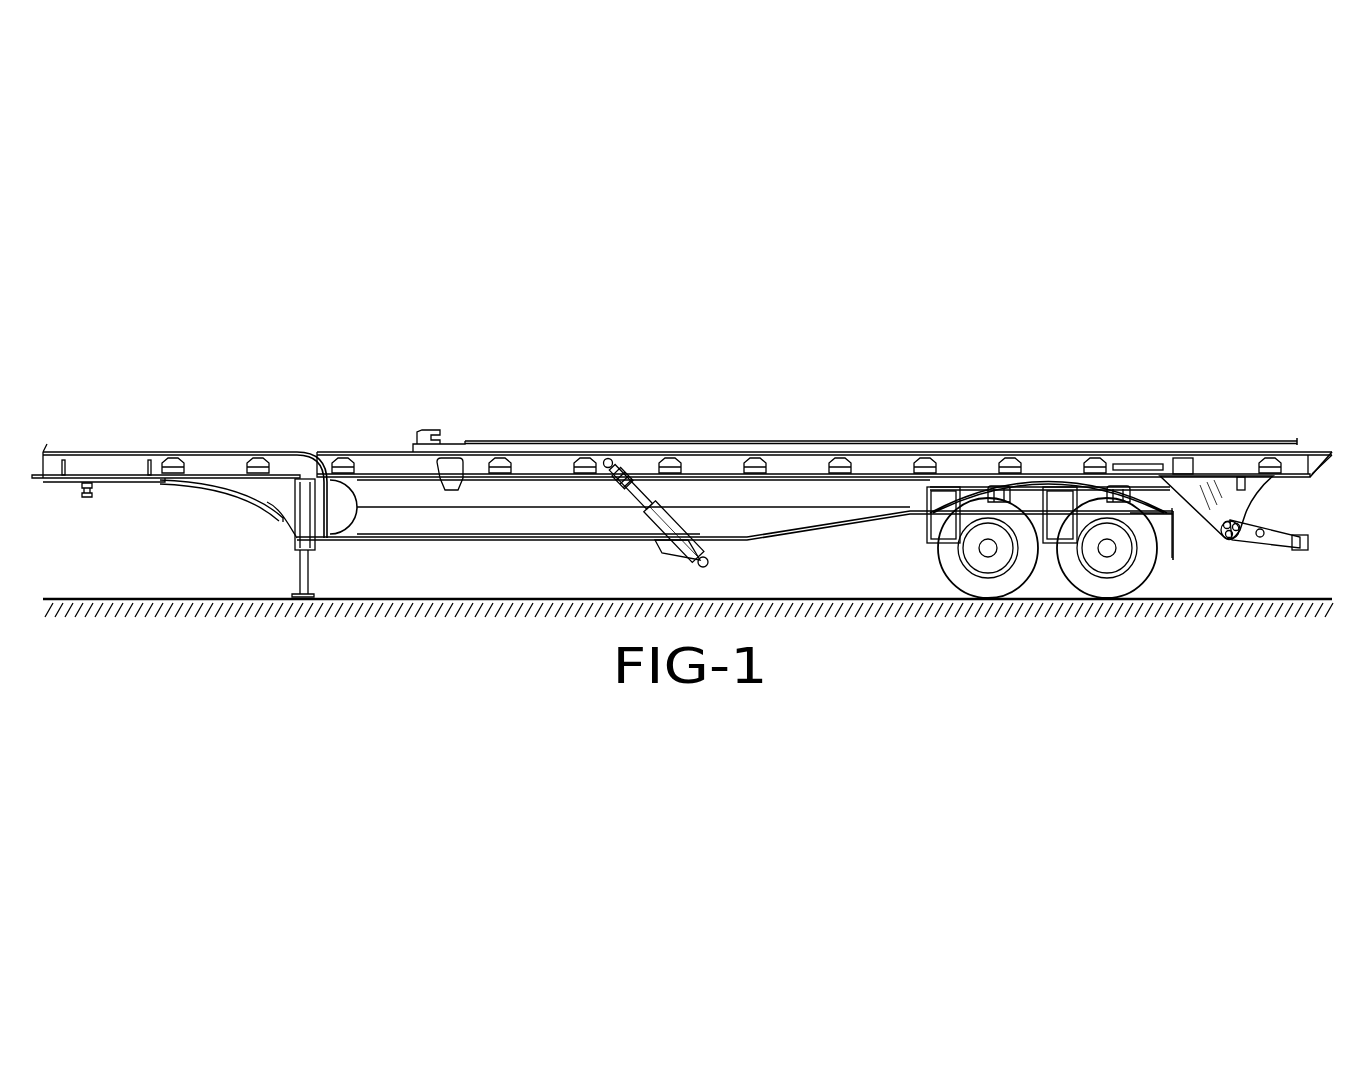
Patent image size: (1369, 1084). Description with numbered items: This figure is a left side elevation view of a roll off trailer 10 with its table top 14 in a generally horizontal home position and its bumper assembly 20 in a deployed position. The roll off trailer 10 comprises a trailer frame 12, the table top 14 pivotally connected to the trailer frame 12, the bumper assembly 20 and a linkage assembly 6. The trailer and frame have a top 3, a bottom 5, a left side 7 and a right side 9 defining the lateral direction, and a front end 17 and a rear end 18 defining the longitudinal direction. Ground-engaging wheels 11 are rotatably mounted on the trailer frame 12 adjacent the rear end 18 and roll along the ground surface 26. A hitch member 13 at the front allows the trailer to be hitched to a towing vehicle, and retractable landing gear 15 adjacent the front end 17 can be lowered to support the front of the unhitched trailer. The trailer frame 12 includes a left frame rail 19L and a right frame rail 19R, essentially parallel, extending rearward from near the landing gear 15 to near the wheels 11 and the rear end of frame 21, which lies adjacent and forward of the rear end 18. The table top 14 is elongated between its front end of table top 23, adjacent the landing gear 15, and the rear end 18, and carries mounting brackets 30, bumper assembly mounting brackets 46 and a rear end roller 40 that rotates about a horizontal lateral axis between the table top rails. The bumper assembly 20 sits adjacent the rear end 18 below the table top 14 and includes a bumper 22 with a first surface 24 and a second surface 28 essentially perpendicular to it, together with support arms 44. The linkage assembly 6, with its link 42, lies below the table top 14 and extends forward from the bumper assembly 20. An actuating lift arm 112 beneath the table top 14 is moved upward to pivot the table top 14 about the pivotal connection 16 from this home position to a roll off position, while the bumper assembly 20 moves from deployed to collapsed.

The top 3 is at (697, 465).
The bottom 5 is at (995, 578).
The linkage assembly 6 is at (1216, 451).
The link 42 is at (1184, 464).
The left side 7 is at (399, 452).
The right side 9 is at (555, 452).
The roll off trailer 10 is at (697, 506).
The ground-engaging wheels 11 is at (984, 590).
The trailer frame 12 is at (735, 575).
The hitch member 13 is at (84, 497).
The table top 14 is at (799, 452).
The retractable landing gear 15 is at (300, 573).
The pivotal connection 16 is at (1145, 465).
The front end 17 is at (52, 425).
The rear end 18 is at (1338, 445).
The left frame rail 19L is at (535, 497).
The right frame rail 19R is at (768, 497).
The bumper assembly 20 is at (1263, 519).
The rear end of frame 21 is at (1193, 515).
The bumper 22 is at (1294, 536).
The front end of table top 23 is at (326, 445).
The first surface 24 is at (1298, 552).
The ground surface 26 is at (848, 598).
The second surface 28 is at (1308, 543).
The mounting brackets 30 is at (1160, 470).
The rear end roller 40 is at (1320, 470).
The support arms 44 is at (1277, 532).
The bumper assembly mounting brackets 46 is at (1209, 477).
The actuating lift arm 112 is at (648, 520).